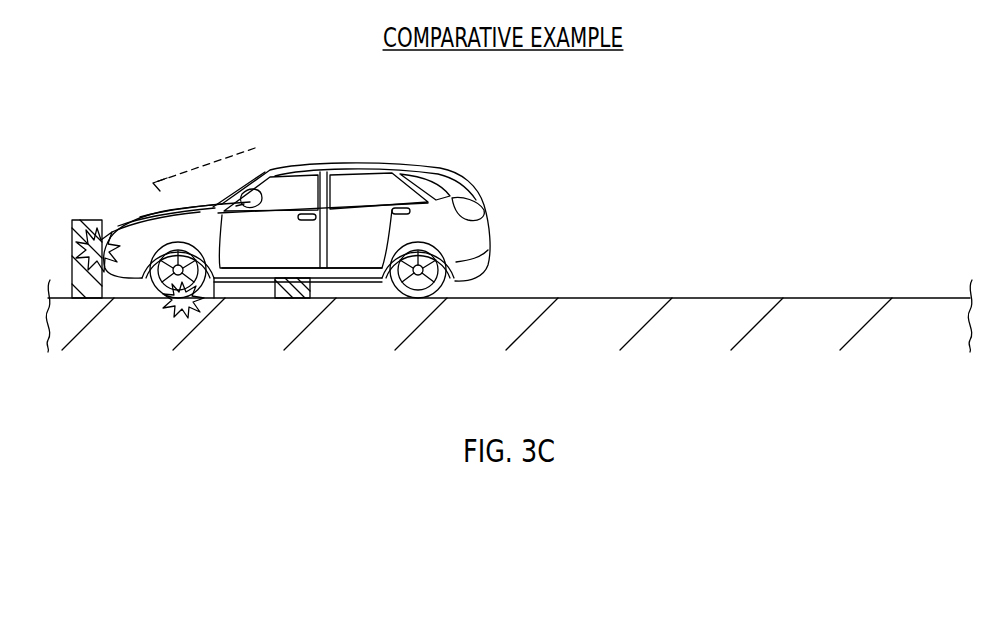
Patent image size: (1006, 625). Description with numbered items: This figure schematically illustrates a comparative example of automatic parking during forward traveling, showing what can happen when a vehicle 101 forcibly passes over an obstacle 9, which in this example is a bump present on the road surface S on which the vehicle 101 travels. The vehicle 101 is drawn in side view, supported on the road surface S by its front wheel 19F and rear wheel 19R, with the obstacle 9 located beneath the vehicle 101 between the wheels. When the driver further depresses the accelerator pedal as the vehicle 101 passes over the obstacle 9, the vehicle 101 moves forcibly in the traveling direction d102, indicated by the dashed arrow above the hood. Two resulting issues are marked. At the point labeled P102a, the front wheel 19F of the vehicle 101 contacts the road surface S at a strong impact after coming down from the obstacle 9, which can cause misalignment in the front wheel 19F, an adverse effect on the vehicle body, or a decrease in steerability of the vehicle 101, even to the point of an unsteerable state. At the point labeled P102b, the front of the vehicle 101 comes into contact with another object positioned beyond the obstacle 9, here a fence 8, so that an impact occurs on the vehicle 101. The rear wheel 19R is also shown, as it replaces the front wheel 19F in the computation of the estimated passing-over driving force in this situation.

The fence 8 is at (90, 219).
The vehicle 101 is at (343, 259).
The traveling direction d102 is at (201, 157).
The contact with fence P102b is at (114, 228).
The front wheel impact with road surface P102a is at (190, 312).
The obstacle 9 is at (290, 300).
The front wheel 19F is at (153, 307).
The rear wheel 19R is at (437, 303).
The road surface S is at (918, 297).